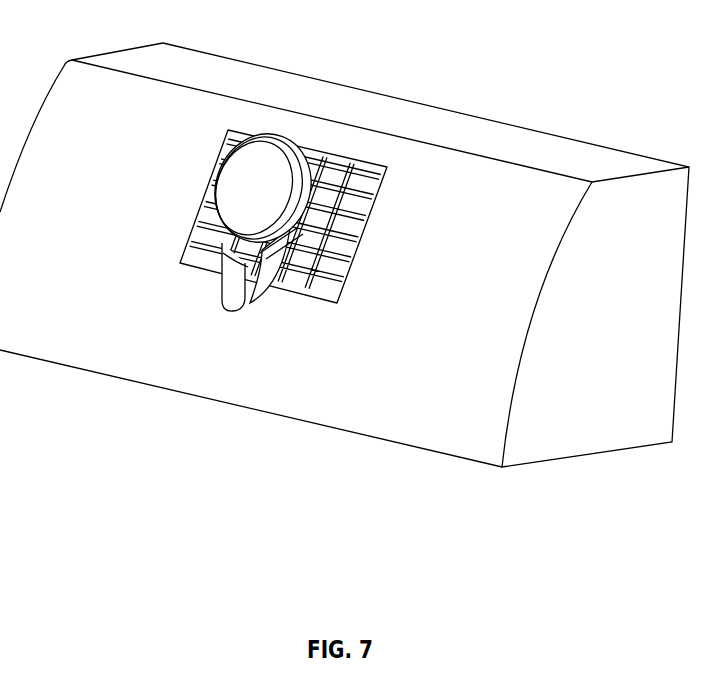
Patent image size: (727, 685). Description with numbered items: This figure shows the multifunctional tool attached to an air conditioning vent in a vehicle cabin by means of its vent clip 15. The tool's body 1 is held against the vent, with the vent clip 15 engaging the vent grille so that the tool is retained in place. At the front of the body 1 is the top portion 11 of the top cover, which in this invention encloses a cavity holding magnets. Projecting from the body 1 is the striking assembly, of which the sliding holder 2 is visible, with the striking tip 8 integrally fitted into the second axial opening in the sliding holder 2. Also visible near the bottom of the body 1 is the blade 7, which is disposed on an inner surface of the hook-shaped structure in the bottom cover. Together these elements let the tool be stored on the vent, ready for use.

The body 1 is at (209, 256).
The sliding holder 2 is at (248, 308).
The blade 7 is at (272, 255).
The striking tip 8 is at (233, 312).
The top portion of the top cover 11 is at (265, 168).
The vent clip 15 is at (340, 167).